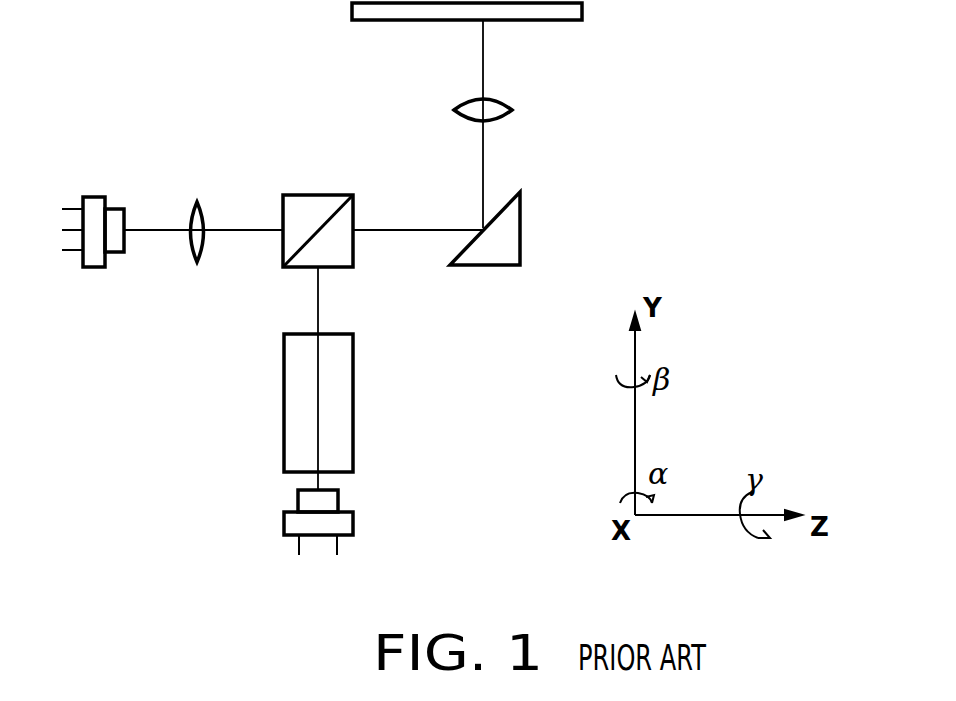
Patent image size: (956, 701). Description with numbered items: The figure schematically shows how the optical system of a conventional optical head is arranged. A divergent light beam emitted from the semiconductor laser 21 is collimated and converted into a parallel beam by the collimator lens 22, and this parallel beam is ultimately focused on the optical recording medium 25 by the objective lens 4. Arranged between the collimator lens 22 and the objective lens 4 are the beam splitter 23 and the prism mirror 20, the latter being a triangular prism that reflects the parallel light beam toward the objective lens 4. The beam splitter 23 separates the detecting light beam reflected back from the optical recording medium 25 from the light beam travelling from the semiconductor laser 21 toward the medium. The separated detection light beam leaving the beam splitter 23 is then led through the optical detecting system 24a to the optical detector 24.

The semiconductor laser 21 is at (96, 198).
The collimator lens 22 is at (192, 202).
The beam splitter 23 is at (300, 206).
The prism mirror 20 is at (508, 243).
The objective lens 4 is at (490, 114).
The optical recording medium 25 is at (563, 21).
The optical detecting system 24a is at (343, 432).
The optical detector 24 is at (343, 524).